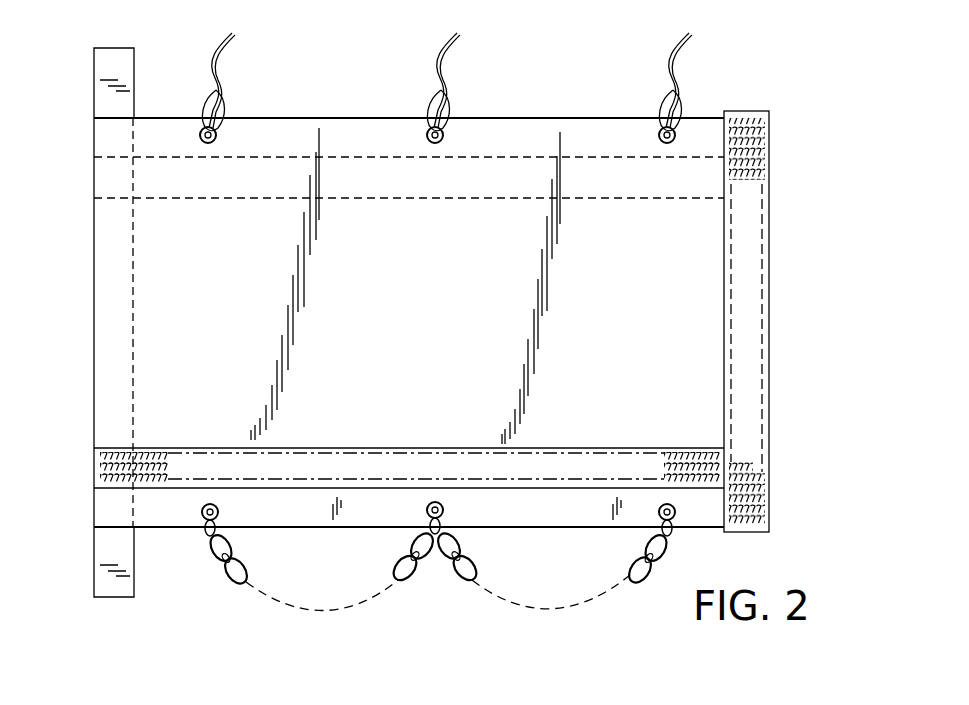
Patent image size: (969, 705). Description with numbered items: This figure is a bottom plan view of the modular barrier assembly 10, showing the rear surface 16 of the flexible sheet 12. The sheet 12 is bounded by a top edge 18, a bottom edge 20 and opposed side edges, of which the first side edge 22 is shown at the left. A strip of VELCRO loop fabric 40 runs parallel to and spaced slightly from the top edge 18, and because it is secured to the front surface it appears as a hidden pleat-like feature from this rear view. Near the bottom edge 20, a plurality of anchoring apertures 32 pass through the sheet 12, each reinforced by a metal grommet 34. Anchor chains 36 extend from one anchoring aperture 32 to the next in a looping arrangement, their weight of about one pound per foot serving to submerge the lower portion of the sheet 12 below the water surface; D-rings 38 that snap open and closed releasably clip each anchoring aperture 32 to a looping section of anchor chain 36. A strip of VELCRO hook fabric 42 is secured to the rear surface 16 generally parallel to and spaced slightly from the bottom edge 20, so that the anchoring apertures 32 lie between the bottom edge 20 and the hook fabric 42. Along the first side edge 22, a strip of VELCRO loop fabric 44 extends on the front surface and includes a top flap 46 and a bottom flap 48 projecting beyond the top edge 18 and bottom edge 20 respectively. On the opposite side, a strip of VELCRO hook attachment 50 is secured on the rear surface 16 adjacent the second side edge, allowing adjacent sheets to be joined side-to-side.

The modular barrier assembly 10 is at (785, 88).
The flexible sheet 12 is at (578, 116).
The rear surface 16 is at (632, 347).
The top edge 18 is at (502, 117).
The bottom edge 20 is at (305, 530).
The first side edge 22 is at (94, 316).
The anchoring aperture 32 is at (220, 510).
The metal grommet 34 is at (205, 508).
The anchor chain 36 is at (243, 578).
The D-ring 38 is at (207, 550).
The strip of VELCRO loop fabric 40 is at (352, 172).
The strip of VELCRO hook fabric 42 is at (345, 456).
The strip of VELCRO loop fabric 44 is at (110, 262).
The top flap 46 is at (115, 72).
The bottom flap 48 is at (94, 556).
The strip of VELCRO hook attachment 50 is at (752, 300).